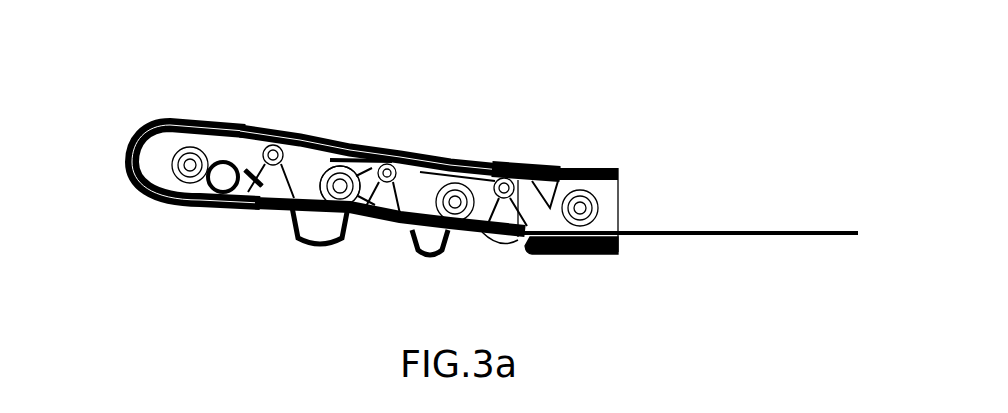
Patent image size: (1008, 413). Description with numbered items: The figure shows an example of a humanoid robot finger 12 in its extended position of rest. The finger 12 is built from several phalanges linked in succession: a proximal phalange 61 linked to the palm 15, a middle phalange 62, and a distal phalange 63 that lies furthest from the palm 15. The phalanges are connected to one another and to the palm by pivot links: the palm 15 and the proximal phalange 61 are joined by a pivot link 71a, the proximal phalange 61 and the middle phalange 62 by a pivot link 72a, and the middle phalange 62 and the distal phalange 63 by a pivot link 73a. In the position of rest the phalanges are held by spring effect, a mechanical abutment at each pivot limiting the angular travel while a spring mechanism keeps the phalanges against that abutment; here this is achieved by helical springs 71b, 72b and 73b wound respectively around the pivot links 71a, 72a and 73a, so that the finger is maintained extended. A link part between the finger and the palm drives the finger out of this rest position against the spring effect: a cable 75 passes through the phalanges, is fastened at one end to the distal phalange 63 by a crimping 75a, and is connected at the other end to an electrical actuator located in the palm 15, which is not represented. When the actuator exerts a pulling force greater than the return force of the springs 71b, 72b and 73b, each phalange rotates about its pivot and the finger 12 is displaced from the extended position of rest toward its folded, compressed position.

The finger 12 is at (138, 237).
The palm 15 is at (597, 166).
The proximal phalange 61 is at (453, 140).
The middle phalange 62 is at (320, 128).
The distal phalange 63 is at (143, 120).
The pivot link 71a is at (513, 160).
The helical spring 71b is at (562, 167).
The pivot link 72a is at (403, 140).
The helical spring 72b is at (373, 123).
The pivot link 73a is at (273, 128).
The helical spring 73b is at (213, 127).
The cable 75 is at (705, 240).
The crimping 75a is at (223, 208).